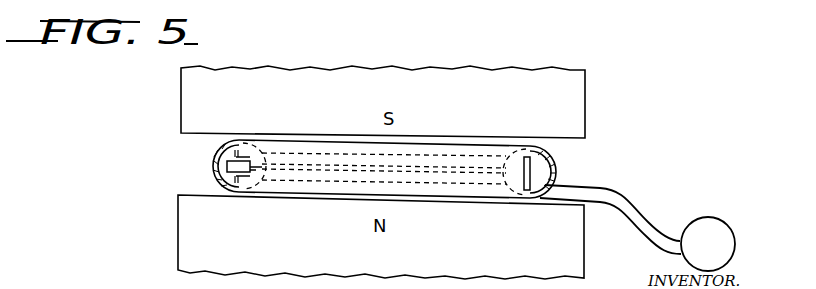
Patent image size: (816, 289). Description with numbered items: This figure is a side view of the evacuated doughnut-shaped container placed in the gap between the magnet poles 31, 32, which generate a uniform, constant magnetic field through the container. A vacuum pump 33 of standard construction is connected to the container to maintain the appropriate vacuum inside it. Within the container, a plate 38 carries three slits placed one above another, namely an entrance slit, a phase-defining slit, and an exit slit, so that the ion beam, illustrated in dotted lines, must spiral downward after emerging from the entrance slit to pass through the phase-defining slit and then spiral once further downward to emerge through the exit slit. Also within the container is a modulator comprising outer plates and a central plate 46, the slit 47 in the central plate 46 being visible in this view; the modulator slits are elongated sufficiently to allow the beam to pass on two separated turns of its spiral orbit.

The magnet pole 31 is at (313, 105).
The magnet pole 32 is at (311, 251).
The vacuum pump 33 is at (713, 228).
The plate 38 is at (226, 162).
The central plate 46 is at (548, 176).
The slit 47 is at (534, 168).